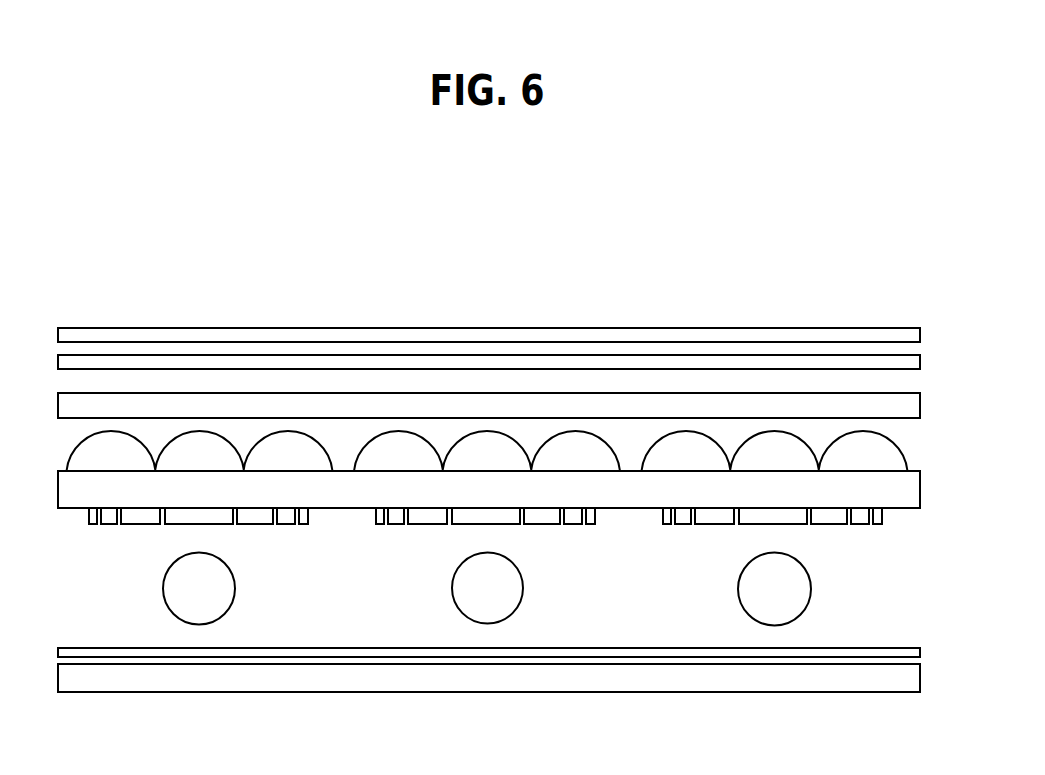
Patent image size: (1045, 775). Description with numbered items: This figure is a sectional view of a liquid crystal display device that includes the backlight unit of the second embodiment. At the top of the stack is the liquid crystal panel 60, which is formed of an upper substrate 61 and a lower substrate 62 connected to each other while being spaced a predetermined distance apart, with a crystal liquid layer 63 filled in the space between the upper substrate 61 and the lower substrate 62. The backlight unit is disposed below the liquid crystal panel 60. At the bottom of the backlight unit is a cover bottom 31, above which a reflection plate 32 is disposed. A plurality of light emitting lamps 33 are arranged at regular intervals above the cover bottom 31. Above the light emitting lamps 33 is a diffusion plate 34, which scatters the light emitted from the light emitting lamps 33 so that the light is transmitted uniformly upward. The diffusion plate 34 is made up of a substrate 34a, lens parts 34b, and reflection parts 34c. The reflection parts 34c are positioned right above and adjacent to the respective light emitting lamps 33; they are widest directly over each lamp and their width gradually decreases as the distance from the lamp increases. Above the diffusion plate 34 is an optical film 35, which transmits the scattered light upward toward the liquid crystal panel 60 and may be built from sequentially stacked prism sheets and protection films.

The cover bottom 31 is at (886, 678).
The reflection plate 32 is at (836, 655).
The light emitting lamps 33 is at (773, 605).
The diffusion plate 34 is at (643, 281).
The substrate 34a is at (707, 483).
The lens parts 34b is at (774, 445).
The reflection parts 34c is at (703, 519).
The optical film 35 is at (883, 402).
The liquid crystal panel 60 is at (278, 259).
The upper substrate 61 is at (275, 335).
The lower substrate 62 is at (372, 361).
The crystal liquid layer 63 is at (327, 349).